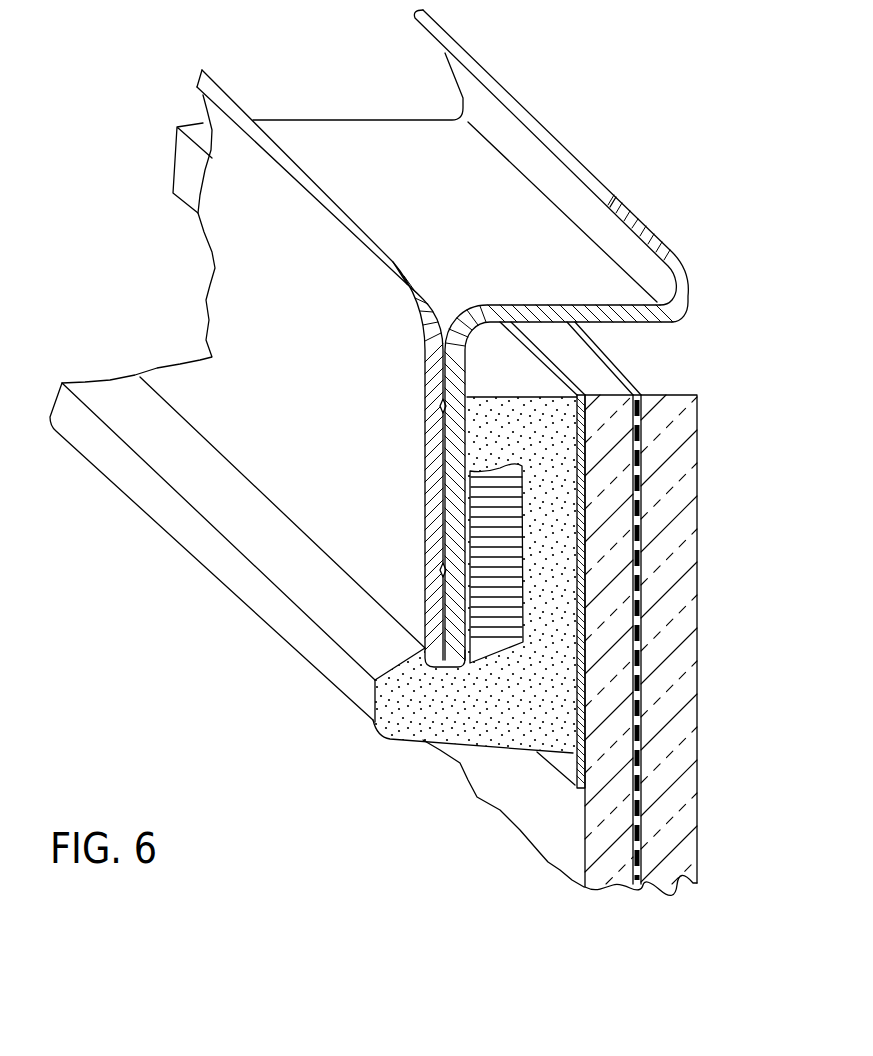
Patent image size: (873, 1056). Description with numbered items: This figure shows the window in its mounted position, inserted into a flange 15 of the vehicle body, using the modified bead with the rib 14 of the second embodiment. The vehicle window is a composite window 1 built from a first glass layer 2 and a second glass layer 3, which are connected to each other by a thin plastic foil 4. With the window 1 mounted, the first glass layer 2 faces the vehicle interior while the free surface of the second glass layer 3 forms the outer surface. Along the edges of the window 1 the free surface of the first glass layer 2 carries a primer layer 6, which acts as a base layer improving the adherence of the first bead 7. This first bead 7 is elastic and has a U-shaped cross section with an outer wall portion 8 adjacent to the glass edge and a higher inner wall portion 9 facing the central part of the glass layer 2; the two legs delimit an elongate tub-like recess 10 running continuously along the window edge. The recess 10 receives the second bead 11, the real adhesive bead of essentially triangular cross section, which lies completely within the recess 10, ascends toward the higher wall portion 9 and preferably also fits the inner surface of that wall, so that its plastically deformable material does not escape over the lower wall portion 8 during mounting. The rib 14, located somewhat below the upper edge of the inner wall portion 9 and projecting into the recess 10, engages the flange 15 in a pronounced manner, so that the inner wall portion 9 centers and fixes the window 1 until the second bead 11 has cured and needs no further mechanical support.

The composite window 1 is at (471, 813).
The first glass layer 2 is at (612, 868).
The second glass layer 3 is at (622, 347).
The plastic foil 4 is at (637, 883).
The primer layer 6 is at (568, 770).
The first bead 7 is at (547, 518).
The outer wall portion 8 is at (548, 387).
The inner wall portion 9 is at (462, 722).
The tub-like recess 10 is at (180, 328).
The second bead 11 is at (507, 595).
The rib 14 is at (417, 640).
The flange 15 is at (372, 345).